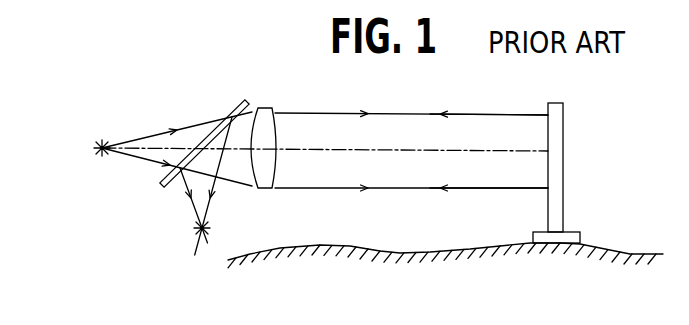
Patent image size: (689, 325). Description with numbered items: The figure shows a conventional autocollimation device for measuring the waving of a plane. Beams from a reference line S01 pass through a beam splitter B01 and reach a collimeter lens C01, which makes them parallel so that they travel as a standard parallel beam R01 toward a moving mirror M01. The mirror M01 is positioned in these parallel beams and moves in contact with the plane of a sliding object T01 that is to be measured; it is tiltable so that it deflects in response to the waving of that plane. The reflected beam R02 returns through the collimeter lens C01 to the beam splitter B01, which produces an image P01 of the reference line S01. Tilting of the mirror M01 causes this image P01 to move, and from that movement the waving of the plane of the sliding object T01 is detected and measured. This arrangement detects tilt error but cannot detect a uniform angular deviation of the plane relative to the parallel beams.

The reference line S01 is at (104, 140).
The beam splitter B01 is at (238, 101).
The collimeter lens C01 is at (267, 108).
The image of the reference line P01 is at (220, 230).
The automatically collimated beam R01 is at (411, 151).
The automatically collimated beam R02 is at (489, 151).
The moving mirror M01 is at (558, 103).
The sliding object T01 is at (397, 255).